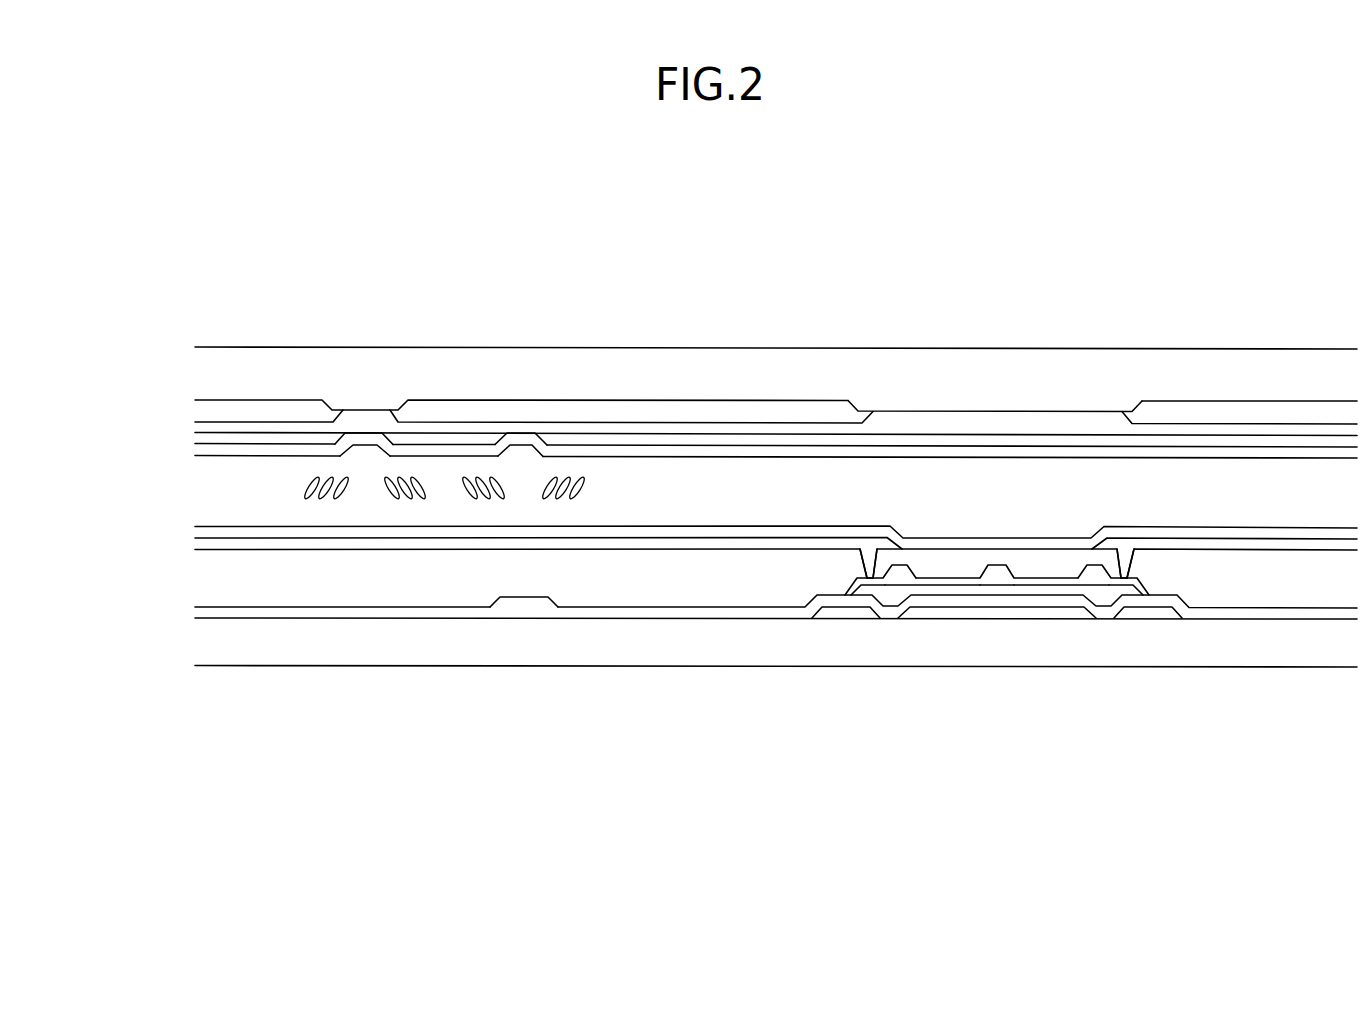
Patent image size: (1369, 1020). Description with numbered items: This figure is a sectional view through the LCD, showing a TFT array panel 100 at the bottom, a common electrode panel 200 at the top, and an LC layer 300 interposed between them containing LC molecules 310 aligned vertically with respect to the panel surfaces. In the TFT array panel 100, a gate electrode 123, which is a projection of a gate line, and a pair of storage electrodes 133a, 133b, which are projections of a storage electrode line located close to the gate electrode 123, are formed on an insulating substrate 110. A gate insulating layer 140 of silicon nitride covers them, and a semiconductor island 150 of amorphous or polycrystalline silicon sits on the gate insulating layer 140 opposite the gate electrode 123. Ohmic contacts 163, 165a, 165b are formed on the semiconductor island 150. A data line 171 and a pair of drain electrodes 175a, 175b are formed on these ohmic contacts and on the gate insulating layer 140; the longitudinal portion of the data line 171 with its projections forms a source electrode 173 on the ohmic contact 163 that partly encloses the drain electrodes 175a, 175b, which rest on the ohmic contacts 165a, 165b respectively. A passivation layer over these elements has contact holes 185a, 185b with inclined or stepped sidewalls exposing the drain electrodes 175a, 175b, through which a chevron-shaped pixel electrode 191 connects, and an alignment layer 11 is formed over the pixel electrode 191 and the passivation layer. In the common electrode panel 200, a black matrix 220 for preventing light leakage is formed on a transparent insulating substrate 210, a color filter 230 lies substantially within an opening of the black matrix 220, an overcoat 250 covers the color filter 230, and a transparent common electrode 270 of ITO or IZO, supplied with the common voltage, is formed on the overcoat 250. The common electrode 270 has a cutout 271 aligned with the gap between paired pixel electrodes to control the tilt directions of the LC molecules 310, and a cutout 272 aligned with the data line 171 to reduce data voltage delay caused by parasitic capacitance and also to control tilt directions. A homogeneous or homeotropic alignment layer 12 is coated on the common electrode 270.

The TFT array panel 100 is at (142, 612).
The insulating substrate 110 is at (712, 638).
The alignment layer 11 is at (203, 532).
The alignment layer 12 is at (203, 450).
The gate electrode 123 is at (949, 610).
The storage electrode 133a is at (832, 614).
The storage electrode 133b is at (1160, 613).
The gate insulating layer 140 is at (565, 613).
The semiconductor island 150 is at (912, 590).
The ohmic contact 163 is at (1017, 586).
The ohmic contact 165a is at (872, 590).
The ohmic contact 165b is at (1137, 586).
The data line 171 is at (514, 608).
The source electrode 173 is at (1001, 577).
The drain electrode 175a is at (857, 582).
The drain electrode 175b is at (1128, 582).
The contact hole 185a is at (856, 567).
The contact hole 185b is at (1142, 568).
The pixel electrode 191 is at (293, 546).
The common electrode panel 200 is at (140, 399).
The insulating substrate 210 is at (228, 376).
The black matrix 220 is at (1002, 402).
The color filter 230 is at (688, 412).
The overcoat 250 is at (898, 422).
The common electrode 270 is at (748, 440).
The cutout 271 is at (369, 423).
The cutout 272 is at (526, 431).
The LC layer 300 is at (170, 497).
The LC molecule 310 is at (322, 476).